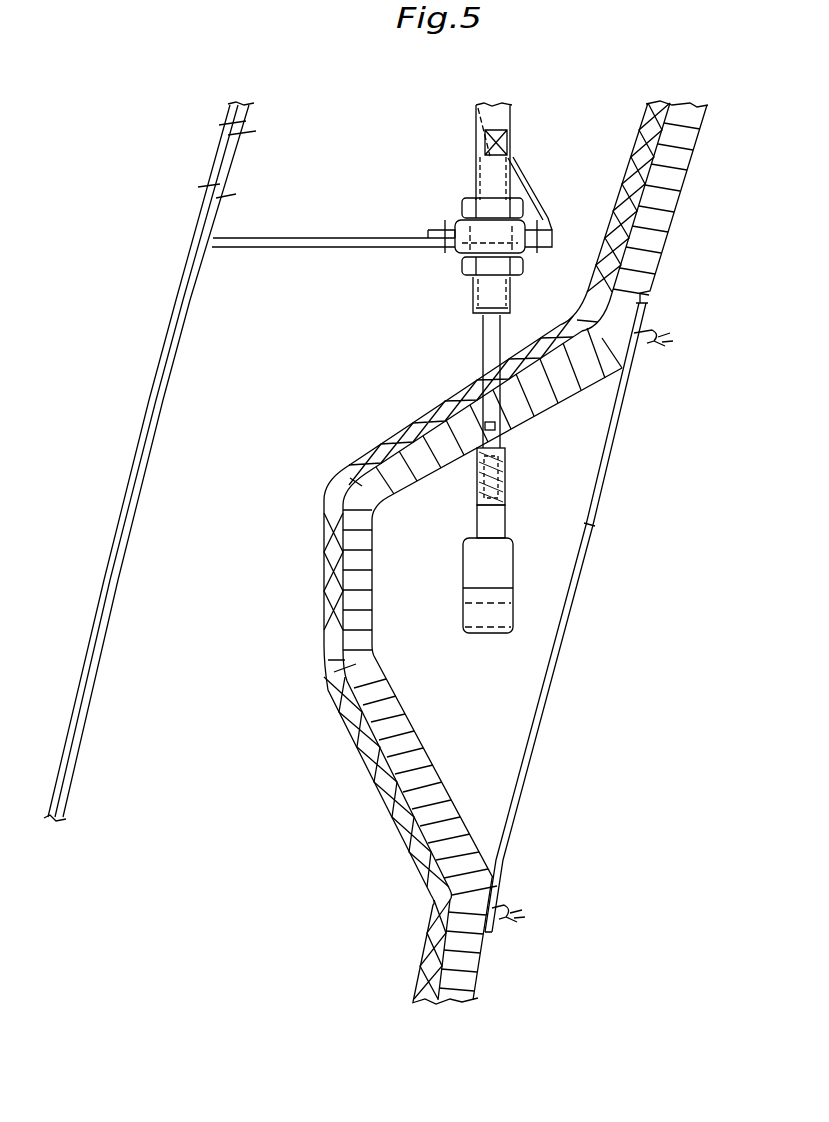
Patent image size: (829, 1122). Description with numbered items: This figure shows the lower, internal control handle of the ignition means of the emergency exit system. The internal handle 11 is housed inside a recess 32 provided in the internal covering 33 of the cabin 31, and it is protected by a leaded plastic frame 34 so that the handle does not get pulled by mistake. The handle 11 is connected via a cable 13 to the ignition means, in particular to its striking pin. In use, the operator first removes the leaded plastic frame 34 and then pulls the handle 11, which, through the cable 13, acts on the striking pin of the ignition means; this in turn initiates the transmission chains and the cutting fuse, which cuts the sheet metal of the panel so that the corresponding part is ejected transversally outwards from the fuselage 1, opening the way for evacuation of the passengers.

The fuselage 1 is at (140, 441).
The internal handle 11 is at (513, 583).
The cable 13 is at (477, 178).
The cabin 31 is at (737, 444).
The recess 32 is at (492, 708).
The internal covering 33 is at (326, 635).
The leaded plastic frame 34 is at (587, 545).